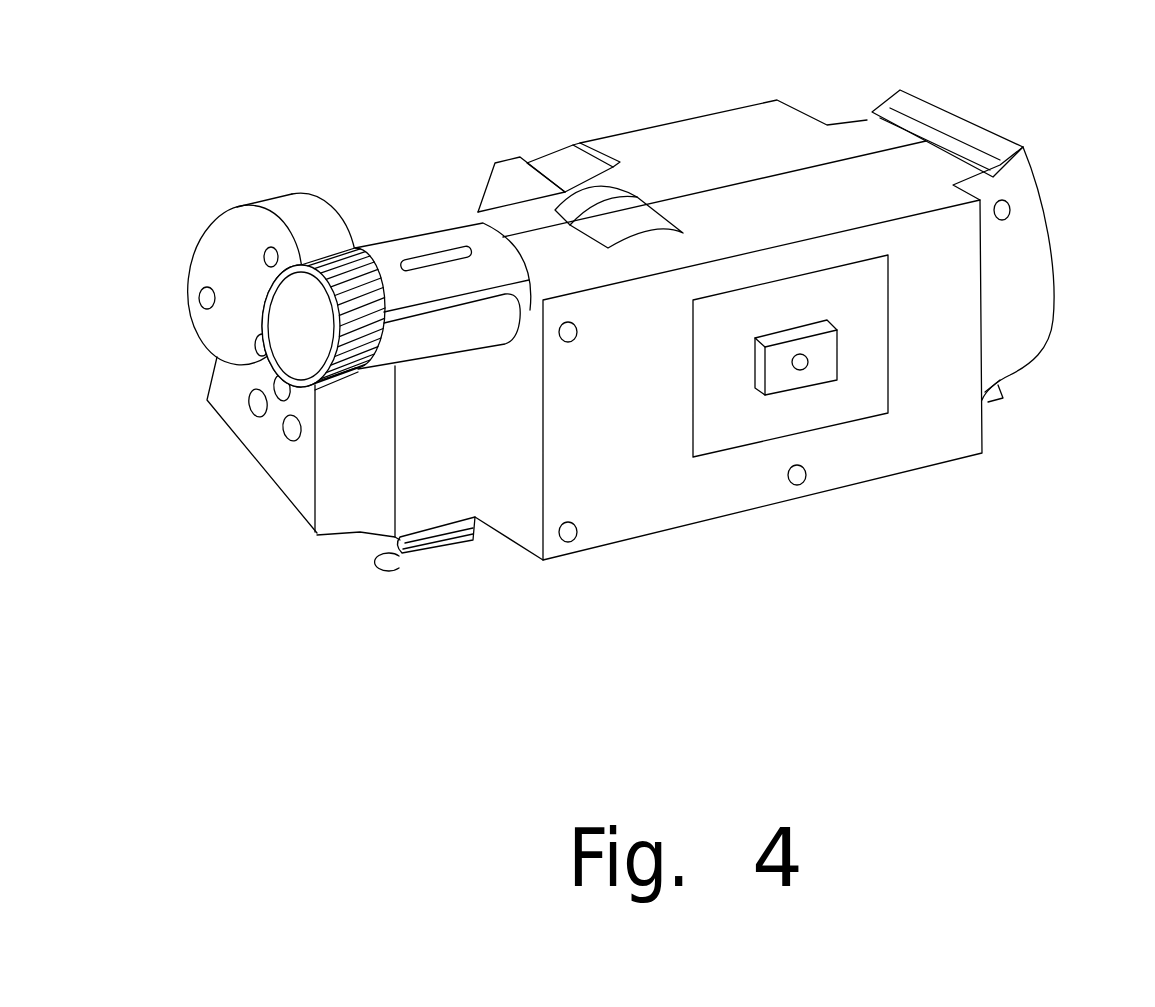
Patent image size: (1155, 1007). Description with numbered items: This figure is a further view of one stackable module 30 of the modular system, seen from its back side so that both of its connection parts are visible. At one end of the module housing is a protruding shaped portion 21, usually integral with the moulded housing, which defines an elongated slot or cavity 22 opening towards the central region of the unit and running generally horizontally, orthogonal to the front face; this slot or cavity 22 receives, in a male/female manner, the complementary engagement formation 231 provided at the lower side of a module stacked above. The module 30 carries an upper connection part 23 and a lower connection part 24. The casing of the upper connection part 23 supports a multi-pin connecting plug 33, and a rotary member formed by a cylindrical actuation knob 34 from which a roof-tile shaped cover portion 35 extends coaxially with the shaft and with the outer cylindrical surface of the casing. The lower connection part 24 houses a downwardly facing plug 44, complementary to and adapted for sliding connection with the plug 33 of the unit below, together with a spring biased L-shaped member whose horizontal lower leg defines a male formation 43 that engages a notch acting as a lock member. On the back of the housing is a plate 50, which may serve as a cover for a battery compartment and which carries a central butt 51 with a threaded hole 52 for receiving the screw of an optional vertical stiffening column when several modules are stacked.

The shaped portion 21 is at (987, 130).
The slot or cavity 22 is at (913, 118).
The upper connection part 23 is at (364, 248).
The engagement formation 231 is at (997, 405).
The lower connection part 24 is at (420, 565).
The module 30 is at (1030, 308).
The connecting plug 33 is at (437, 240).
The actuation knob 34 is at (247, 420).
The cover portion 35 is at (436, 325).
The male formation 43 is at (375, 568).
The plug 44 is at (447, 542).
The plate 50 is at (731, 430).
The central butt 51 is at (778, 368).
The threaded hole 52 is at (802, 354).